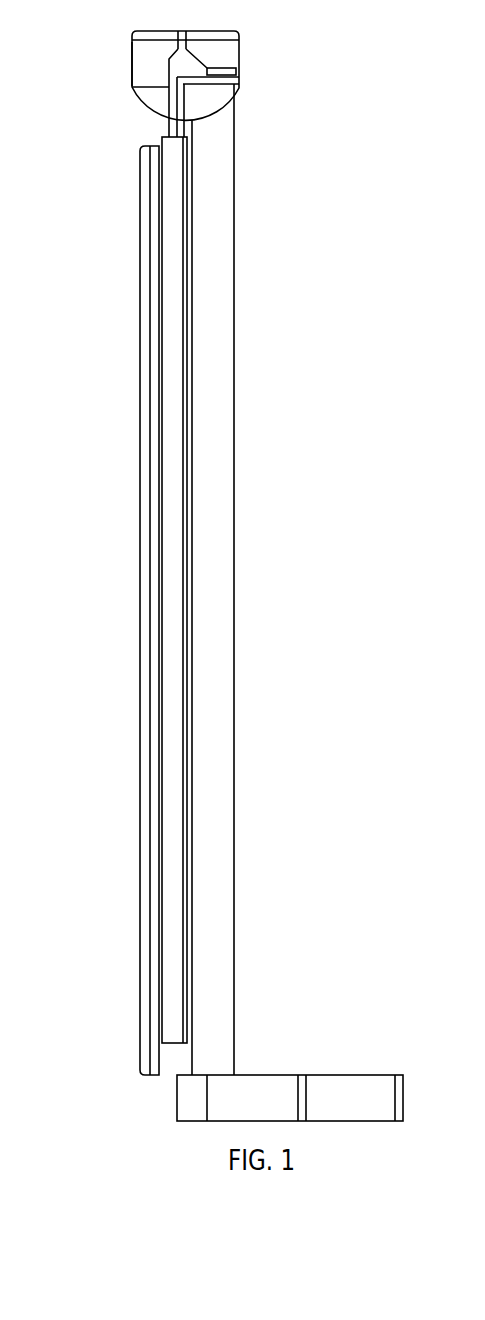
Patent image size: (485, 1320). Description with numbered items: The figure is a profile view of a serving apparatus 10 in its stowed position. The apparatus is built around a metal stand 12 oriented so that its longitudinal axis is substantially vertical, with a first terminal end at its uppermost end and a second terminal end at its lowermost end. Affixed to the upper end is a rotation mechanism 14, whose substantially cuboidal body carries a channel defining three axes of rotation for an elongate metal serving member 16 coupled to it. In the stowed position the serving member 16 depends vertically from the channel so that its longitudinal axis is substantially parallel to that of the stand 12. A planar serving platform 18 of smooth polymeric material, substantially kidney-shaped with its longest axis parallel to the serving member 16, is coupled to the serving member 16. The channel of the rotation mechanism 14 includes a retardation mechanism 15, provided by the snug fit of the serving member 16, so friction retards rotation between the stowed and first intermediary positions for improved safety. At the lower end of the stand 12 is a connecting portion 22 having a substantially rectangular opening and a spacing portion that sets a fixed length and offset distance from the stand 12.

The serving apparatus 10 is at (78, 211).
The metal stand 12 is at (223, 440).
The rotation mechanism 14 is at (217, 50).
The retardation mechanism 15 is at (108, 60).
The elongate metal serving member 16 is at (172, 627).
The planar serving platform 18 is at (140, 652).
The connecting portion 22 is at (342, 1105).